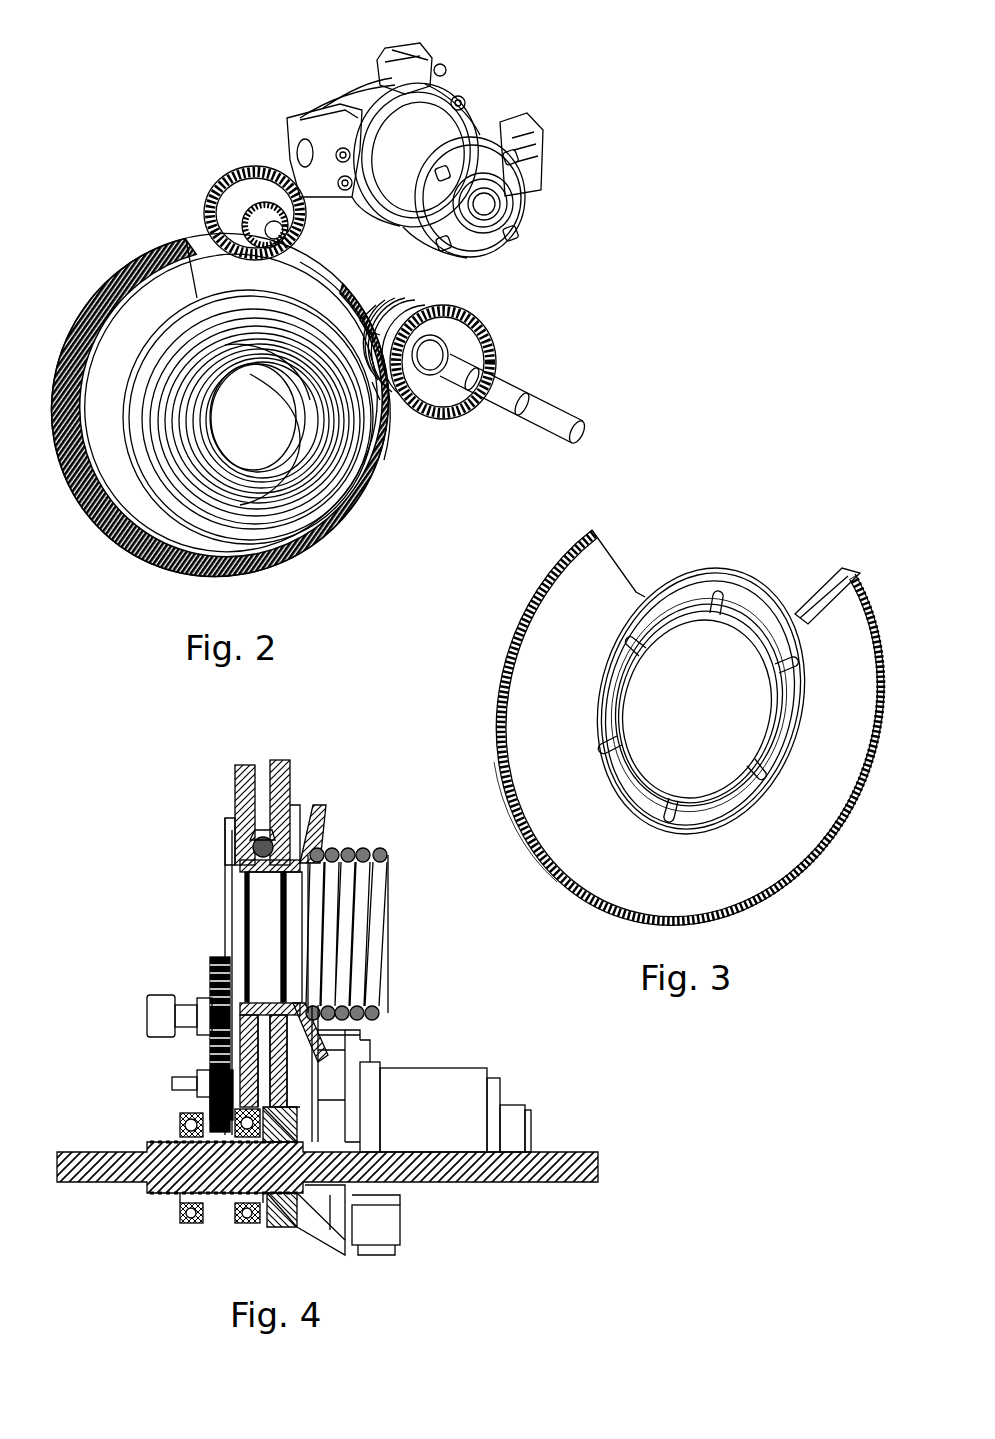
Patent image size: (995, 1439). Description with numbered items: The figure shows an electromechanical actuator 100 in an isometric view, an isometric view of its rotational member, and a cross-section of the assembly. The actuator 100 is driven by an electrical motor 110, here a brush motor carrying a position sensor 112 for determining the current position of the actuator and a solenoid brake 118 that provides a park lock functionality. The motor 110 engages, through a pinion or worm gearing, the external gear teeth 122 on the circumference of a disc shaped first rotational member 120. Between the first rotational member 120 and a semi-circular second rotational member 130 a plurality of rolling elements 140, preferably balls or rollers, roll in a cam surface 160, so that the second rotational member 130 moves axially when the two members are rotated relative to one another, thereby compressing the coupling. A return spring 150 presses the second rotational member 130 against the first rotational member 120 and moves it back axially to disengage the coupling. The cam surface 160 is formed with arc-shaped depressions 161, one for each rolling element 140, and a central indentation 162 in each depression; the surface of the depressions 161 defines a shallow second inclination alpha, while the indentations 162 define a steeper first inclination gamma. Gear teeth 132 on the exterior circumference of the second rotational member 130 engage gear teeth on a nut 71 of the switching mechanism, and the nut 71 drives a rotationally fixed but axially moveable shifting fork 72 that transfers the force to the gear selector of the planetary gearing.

In FIG. 2, the electromechanical actuator 100 is at (588, 155).
In FIG. 4, the electromechanical actuator 100 is at (428, 994).
In FIG. 2, the electrical motor 110 is at (447, 138).
In FIG. 4, the electrical motor 110 is at (418, 1068).
In FIG. 2, the position sensor 112 is at (403, 119).
In FIG. 2, the solenoid brake 118 is at (355, 95).
In FIG. 2, the first rotational member 120 is at (55, 408).
In FIG. 4, the first rotational member 120 is at (237, 775).
In FIG. 2, the external gear teeth 122 is at (105, 272).
In FIG. 2, the second rotational member 130 is at (315, 550).
In FIG. 3, the second rotational member 130 is at (522, 716).
In FIG. 4, the second rotational member 130 is at (283, 770).
In FIG. 3, the gear teeth 132 is at (512, 788).
In FIG. 4, the rolling elements 140 is at (255, 855).
In FIG. 4, the return spring 150 is at (363, 855).
In FIG. 3, the cam surface 160 is at (750, 608).
In FIG. 3, the arc-shaped depressions 161 is at (790, 725).
In FIG. 3, the indentation 162 is at (722, 600).
In FIG. 2, the nut 71 is at (510, 326).
In FIG. 4, the nut 71 is at (285, 1215).
In FIG. 2, the shifting fork 72 is at (515, 387).
In FIG. 4, the shifting fork 72 is at (565, 1152).
In FIG. 3, the first inclination gamma is at (732, 598).
In FIG. 3, the second inclination alpha is at (775, 630).